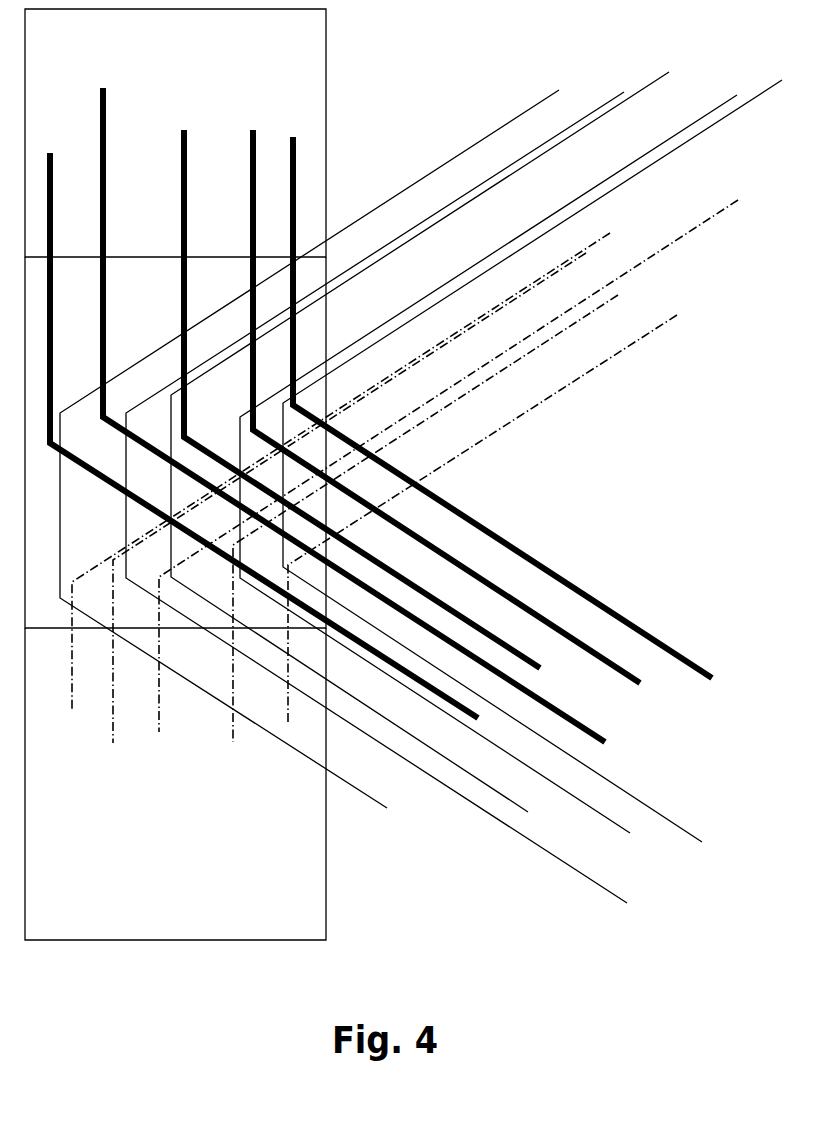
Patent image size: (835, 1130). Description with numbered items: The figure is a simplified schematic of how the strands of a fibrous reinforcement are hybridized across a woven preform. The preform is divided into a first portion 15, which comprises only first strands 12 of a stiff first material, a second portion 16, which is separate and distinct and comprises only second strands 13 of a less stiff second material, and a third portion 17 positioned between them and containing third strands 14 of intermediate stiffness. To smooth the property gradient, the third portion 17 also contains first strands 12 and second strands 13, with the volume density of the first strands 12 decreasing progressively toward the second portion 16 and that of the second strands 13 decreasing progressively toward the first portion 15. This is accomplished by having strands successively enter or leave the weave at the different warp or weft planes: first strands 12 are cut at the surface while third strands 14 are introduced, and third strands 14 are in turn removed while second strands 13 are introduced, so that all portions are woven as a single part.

The first strands 12 is at (74, 694).
The second strands 13 is at (50, 160).
The third strands 14 is at (375, 800).
The first portion 15 is at (165, 843).
The second portion 16 is at (167, 57).
The third portion 17 is at (127, 317).